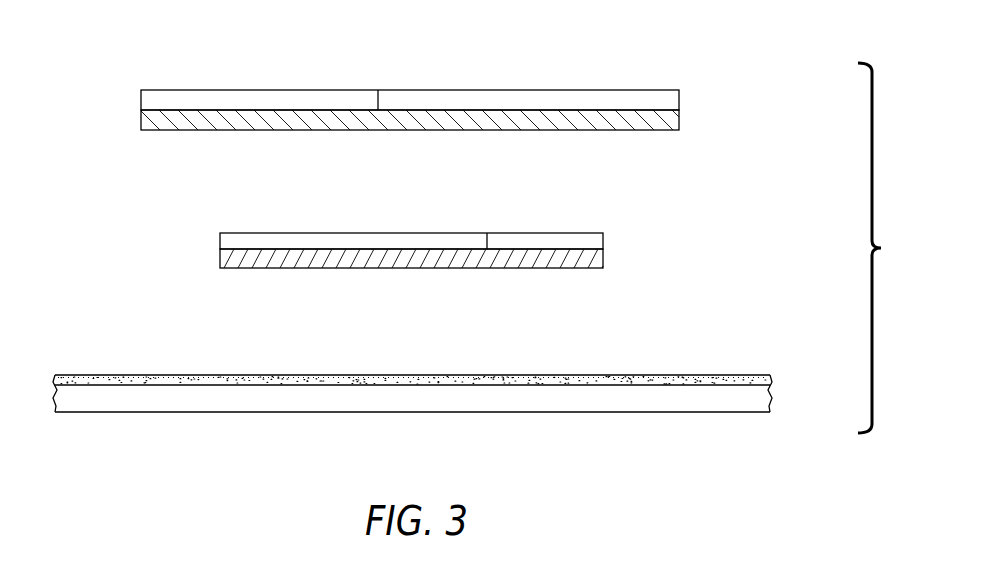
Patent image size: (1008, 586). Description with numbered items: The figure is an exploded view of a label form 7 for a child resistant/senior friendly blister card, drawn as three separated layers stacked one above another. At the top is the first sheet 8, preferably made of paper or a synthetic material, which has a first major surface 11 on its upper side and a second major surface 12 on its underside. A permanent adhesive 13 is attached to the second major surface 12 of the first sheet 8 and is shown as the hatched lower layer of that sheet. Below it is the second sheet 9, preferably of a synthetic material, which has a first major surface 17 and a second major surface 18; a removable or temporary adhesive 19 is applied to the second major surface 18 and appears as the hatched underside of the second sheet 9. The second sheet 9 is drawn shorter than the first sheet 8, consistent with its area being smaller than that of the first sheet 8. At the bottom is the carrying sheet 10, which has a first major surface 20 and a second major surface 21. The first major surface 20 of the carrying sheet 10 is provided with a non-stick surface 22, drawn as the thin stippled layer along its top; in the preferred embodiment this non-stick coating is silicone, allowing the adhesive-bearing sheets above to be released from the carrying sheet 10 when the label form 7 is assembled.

The label form 7 is at (880, 248).
The first sheet 8 is at (435, 104).
The second sheet 9 is at (410, 236).
The carrying sheet 10 is at (444, 398).
The first major surface 11 is at (172, 90).
The second major surface 12 is at (378, 90).
The permanent adhesive 13 is at (162, 118).
The first major surface 17 is at (283, 233).
The second major surface 18 is at (487, 233).
The removable adhesive 19 is at (220, 258).
The first major surface 20 is at (187, 388).
The second major surface 21 is at (333, 413).
The non-stick surface 22 is at (690, 375).